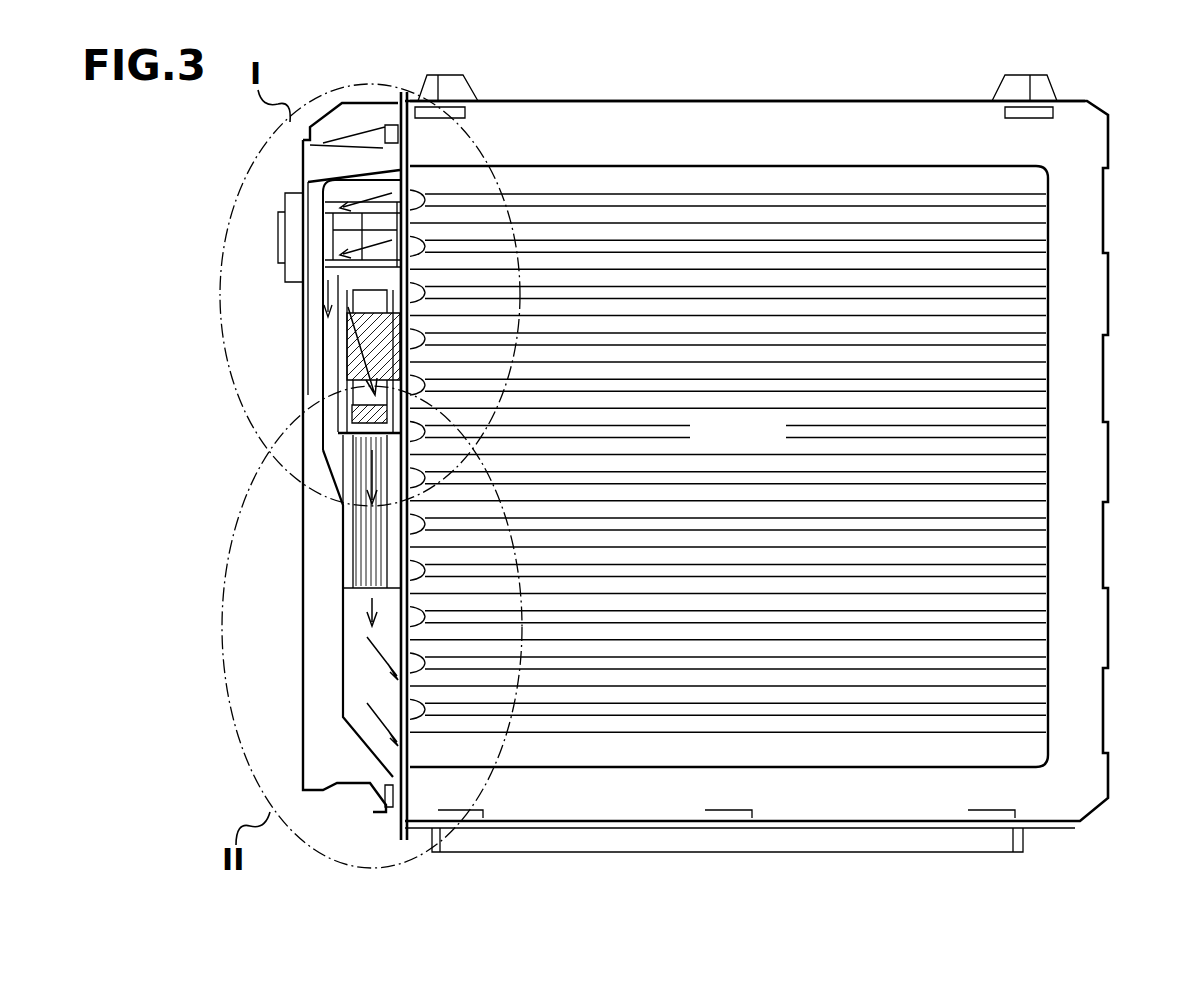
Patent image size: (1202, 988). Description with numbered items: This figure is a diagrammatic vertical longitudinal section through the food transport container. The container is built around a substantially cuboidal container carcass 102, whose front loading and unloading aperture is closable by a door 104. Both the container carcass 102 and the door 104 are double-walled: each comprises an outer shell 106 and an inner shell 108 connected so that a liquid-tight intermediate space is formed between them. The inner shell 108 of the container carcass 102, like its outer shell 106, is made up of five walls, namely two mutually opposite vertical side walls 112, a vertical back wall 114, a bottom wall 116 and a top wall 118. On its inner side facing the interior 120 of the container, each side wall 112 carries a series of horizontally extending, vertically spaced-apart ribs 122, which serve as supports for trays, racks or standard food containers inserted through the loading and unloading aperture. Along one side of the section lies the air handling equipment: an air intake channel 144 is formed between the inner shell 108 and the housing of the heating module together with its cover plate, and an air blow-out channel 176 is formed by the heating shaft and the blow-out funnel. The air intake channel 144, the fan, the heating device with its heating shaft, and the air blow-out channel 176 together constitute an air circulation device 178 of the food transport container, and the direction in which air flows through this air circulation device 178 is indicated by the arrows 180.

The container carcass 102 is at (700, 116).
The door 104 is at (362, 123).
The outer shell 106 is at (302, 582).
The inner shell 108 is at (805, 742).
The side walls 112 is at (1027, 603).
The back wall 114 is at (1040, 350).
The bottom wall 116 is at (900, 748).
The top wall 118 is at (828, 183).
The interior 120 is at (758, 443).
The ribs 122 is at (1023, 293).
The air intake channel 144 is at (377, 229).
The air blow-out channel 176 is at (365, 677).
The air circulation device 178 is at (300, 354).
The arrows 180 is at (362, 470).